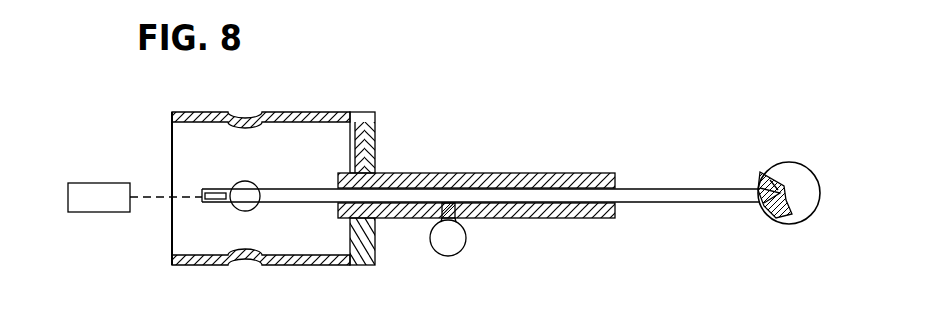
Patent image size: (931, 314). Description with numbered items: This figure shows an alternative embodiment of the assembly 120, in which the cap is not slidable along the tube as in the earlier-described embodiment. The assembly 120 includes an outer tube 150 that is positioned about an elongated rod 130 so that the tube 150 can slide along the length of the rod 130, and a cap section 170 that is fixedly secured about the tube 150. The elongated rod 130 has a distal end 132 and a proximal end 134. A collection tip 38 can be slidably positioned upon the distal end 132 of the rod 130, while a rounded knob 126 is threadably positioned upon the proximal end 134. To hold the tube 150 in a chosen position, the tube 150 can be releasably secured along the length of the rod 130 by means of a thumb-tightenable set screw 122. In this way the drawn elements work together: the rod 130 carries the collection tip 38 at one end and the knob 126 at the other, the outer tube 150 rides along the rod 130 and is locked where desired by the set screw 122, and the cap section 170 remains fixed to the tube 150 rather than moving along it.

The collection tip 38 is at (87, 188).
The assembly 120 is at (448, 128).
The thumb-tightenable set screw 122 is at (466, 243).
The rounded knob 126 is at (792, 162).
The elongated rod 130 is at (672, 188).
The distal end 132 is at (200, 197).
The proximal end 134 is at (768, 219).
The outer tube 150 is at (527, 172).
The cap section 170 is at (287, 110).